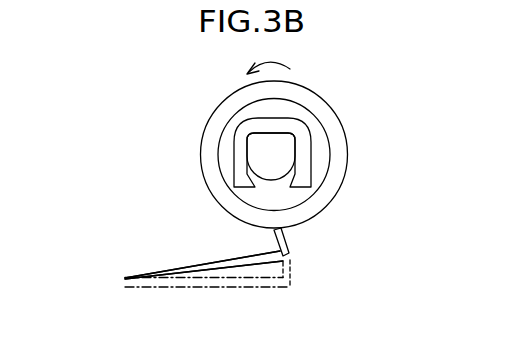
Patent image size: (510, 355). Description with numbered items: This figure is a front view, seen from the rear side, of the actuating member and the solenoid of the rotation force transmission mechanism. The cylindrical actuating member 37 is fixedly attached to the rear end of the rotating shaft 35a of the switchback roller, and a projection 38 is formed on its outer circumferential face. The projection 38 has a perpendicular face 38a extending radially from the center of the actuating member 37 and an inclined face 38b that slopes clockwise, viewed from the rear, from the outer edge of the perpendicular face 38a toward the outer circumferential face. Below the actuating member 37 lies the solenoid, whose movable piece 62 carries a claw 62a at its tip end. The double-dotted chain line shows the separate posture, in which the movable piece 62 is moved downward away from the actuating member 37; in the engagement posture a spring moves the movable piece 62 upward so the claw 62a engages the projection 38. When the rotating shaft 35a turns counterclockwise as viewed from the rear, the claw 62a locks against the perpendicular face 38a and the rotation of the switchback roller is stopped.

The actuating member 37 is at (203, 146).
The rotating shaft 35a is at (258, 148).
The projection 38 is at (257, 237).
The perpendicular face 38a is at (270, 243).
The inclined face 38b is at (277, 241).
The movable piece 62 is at (238, 266).
The claw 62a is at (289, 245).